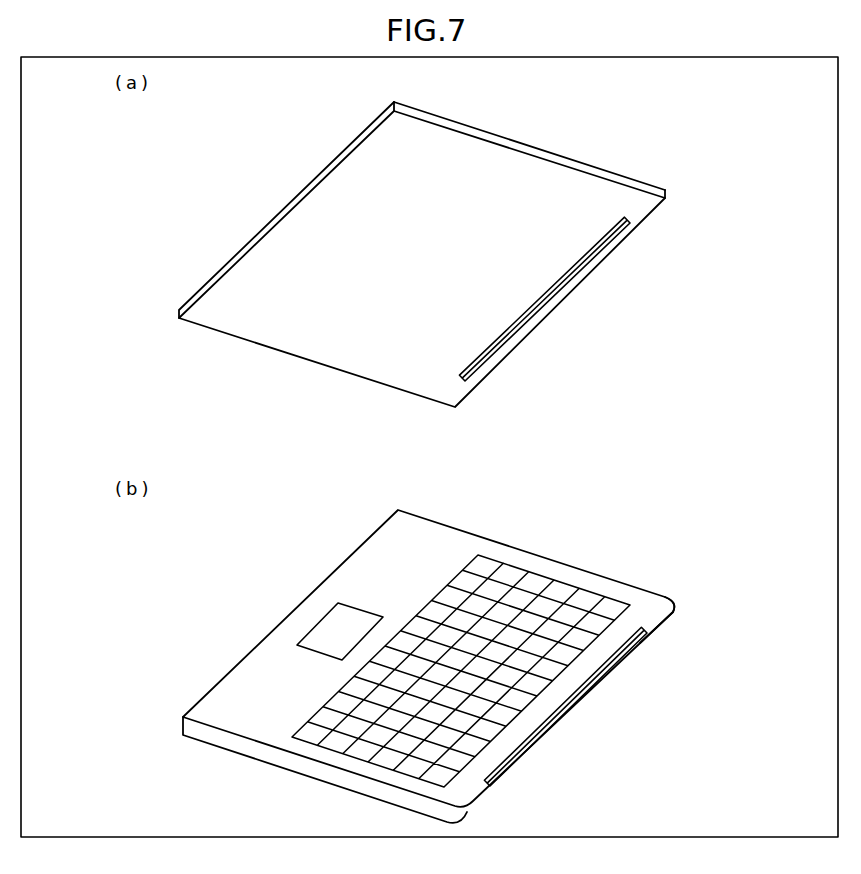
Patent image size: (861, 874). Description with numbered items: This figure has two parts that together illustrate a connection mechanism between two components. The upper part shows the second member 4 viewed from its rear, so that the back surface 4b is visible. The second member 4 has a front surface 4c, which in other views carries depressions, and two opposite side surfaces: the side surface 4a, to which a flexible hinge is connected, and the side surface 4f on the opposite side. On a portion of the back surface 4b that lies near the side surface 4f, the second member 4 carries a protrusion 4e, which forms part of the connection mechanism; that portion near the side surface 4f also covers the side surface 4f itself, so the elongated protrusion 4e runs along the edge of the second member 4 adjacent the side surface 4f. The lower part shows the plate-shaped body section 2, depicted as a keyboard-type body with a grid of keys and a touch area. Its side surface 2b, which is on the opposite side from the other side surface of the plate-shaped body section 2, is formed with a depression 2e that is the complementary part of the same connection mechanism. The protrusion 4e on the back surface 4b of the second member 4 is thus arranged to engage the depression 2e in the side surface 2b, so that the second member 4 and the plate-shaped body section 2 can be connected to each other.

The second member 4 is at (439, 255).
The side surface 4a is at (282, 213).
The back surface 4b is at (323, 350).
The front surface 4c is at (511, 141).
The protrusion 4e is at (533, 321).
The side surface 4f is at (653, 210).
The plate-shaped body section 2 is at (449, 665).
The side surface 2b is at (662, 621).
The depression 2e is at (574, 704).